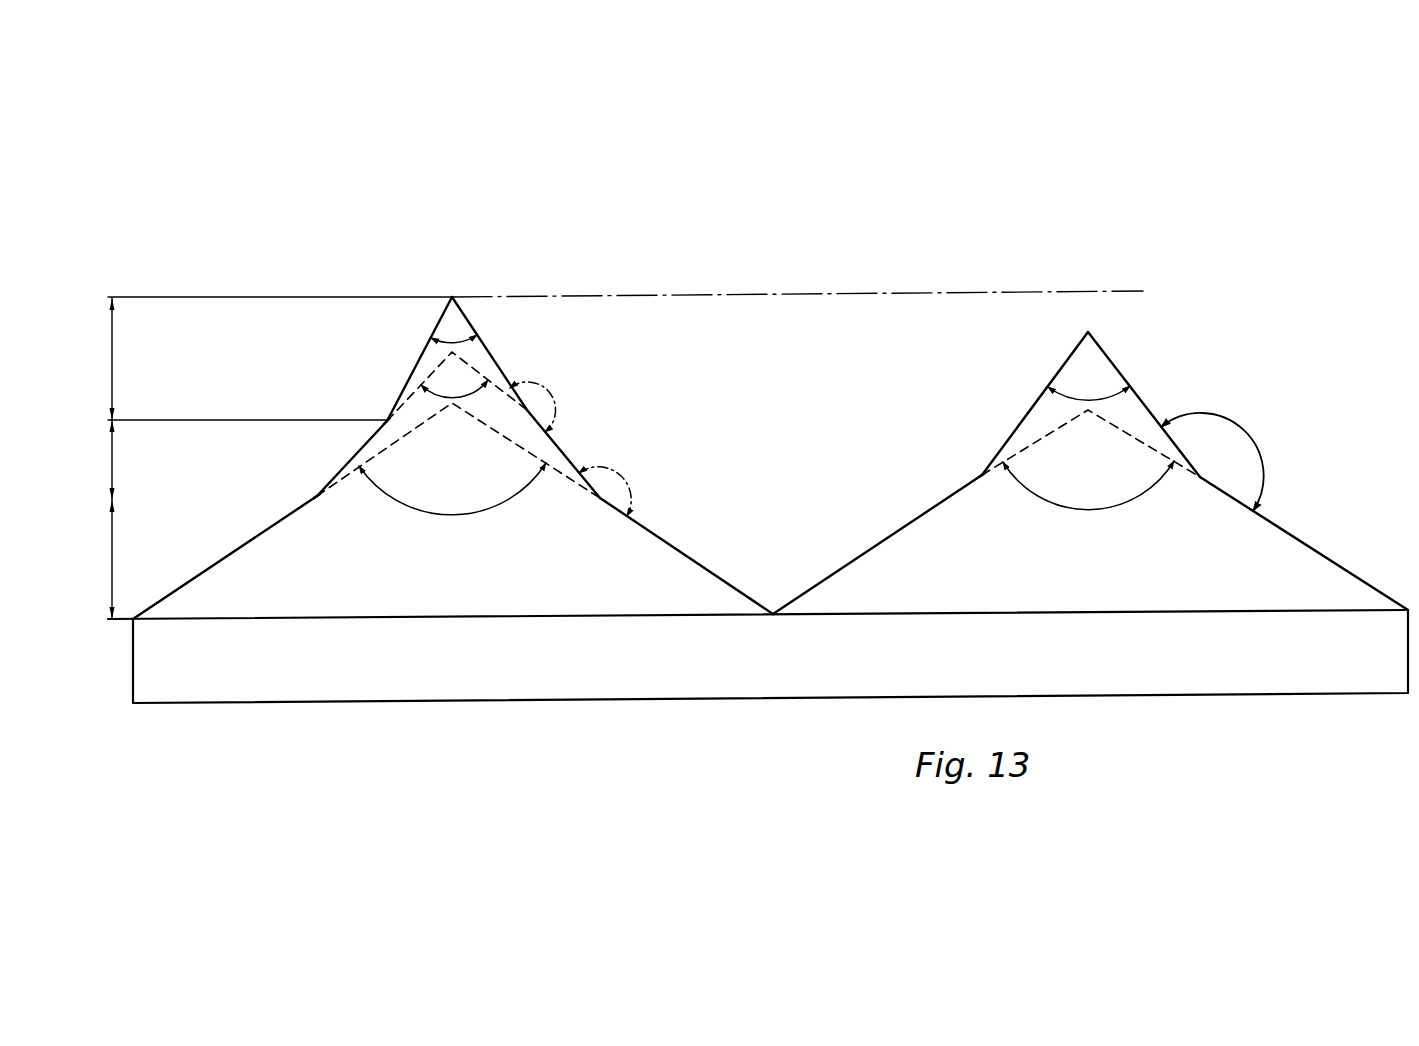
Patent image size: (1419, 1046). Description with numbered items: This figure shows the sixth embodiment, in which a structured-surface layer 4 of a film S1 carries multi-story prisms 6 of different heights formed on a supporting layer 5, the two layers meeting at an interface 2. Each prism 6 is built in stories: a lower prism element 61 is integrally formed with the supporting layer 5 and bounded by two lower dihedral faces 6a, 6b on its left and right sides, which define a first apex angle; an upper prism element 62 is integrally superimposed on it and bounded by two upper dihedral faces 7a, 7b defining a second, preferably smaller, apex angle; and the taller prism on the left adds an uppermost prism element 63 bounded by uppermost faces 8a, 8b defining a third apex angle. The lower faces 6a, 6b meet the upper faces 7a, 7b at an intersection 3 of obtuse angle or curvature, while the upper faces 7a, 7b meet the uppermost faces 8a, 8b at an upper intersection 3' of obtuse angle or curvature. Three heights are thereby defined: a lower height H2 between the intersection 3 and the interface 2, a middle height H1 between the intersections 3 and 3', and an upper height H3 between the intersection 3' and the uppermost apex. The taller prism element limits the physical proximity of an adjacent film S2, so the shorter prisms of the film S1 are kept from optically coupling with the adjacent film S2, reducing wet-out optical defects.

The interface 2 is at (133, 619).
The intersection 3 is at (631, 480).
The upper intersection 3' is at (372, 405).
The structured-surface layer 4 is at (760, 327).
The supporting layer 5 is at (297, 657).
The prism 6 is at (1328, 360).
The lower dihedral face 6a is at (213, 567).
The lower dihedral face 6b is at (650, 536).
The upper dihedral face 7a is at (344, 467).
The upper dihedral face 7b is at (545, 436).
The uppermost face 8a is at (417, 366).
The uppermost face 8b is at (478, 337).
The lower prism element 61 is at (683, 575).
The upper prism element 62 is at (547, 433).
The uppermost prism element 63 is at (478, 352).
The film S1 is at (182, 688).
The adjacent film S2 is at (1020, 296).
The height H1 is at (235, 460).
The height H2 is at (99, 559).
The height H3 is at (267, 458).